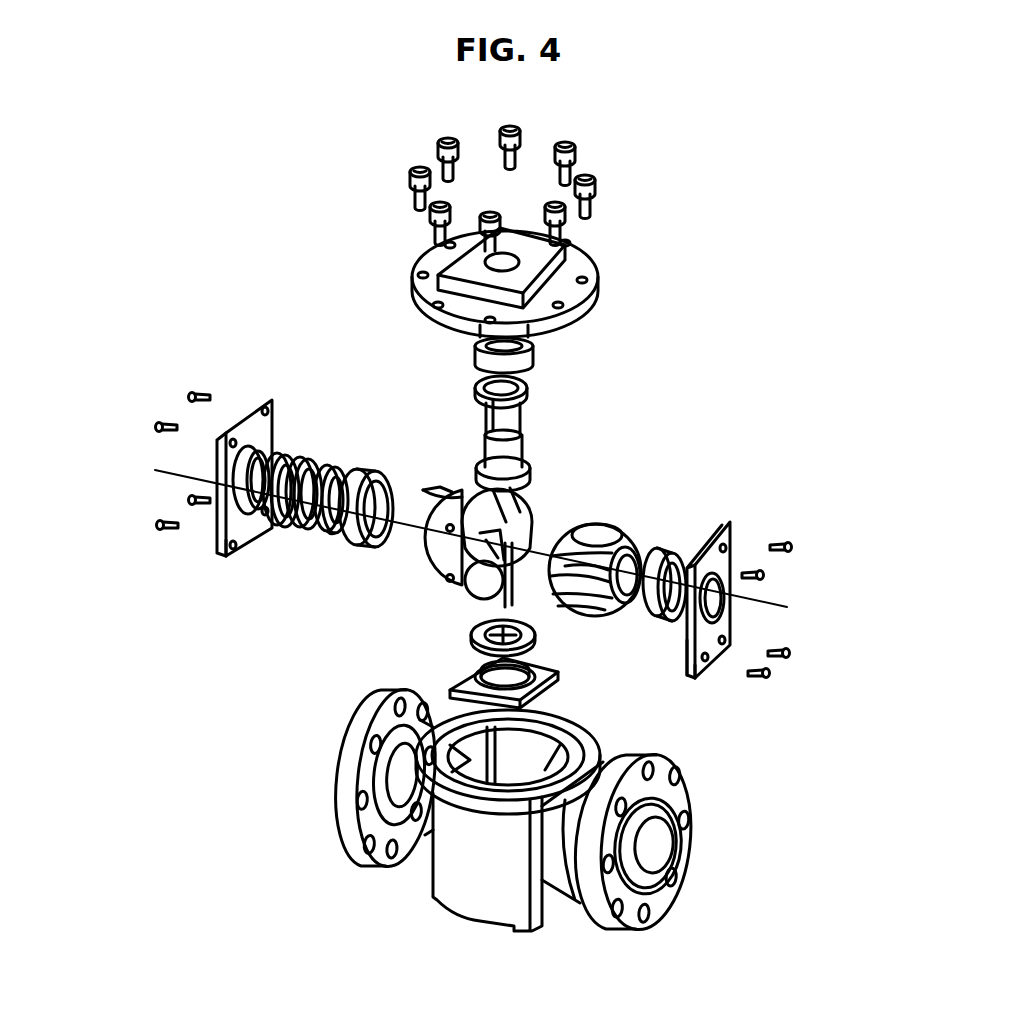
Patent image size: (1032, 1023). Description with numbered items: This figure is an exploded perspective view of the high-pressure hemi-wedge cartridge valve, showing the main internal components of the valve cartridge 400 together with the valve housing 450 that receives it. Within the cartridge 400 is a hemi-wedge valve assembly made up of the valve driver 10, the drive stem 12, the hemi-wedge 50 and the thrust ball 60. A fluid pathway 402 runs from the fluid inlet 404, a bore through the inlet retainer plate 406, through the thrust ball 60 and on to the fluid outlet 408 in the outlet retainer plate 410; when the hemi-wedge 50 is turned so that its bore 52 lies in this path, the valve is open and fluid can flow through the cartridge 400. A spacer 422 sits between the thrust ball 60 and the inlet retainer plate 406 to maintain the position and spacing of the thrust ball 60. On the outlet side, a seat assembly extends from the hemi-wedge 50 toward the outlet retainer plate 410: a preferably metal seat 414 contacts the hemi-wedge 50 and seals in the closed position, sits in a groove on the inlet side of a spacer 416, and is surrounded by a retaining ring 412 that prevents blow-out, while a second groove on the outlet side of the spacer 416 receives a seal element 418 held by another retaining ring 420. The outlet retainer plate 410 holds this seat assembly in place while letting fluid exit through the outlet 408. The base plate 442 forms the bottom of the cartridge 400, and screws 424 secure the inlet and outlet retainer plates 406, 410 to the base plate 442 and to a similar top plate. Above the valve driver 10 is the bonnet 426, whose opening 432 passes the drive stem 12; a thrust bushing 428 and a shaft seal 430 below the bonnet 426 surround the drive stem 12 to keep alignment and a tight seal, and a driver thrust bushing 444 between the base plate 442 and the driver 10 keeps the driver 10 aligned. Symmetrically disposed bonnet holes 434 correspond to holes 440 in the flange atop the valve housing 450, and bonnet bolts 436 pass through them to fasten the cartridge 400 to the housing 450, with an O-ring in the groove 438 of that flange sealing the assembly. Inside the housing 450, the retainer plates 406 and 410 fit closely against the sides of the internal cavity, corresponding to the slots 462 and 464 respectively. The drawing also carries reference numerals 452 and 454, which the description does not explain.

The valve cartridge 400 is at (368, 660).
The fluid pathway 402 is at (138, 464).
The fluid inlet 404 is at (685, 625).
The inlet retainer plate 406 is at (730, 525).
The fluid outlet 408 is at (268, 423).
The outlet retainer plate 410 is at (265, 408).
The retaining ring 412 is at (383, 472).
The seat 414 is at (337, 533).
The spacer 416 is at (340, 463).
The seal element 418 is at (293, 532).
The retaining ring 420 is at (287, 453).
The spacer 422 is at (667, 552).
The screws 424 is at (193, 390).
The bonnet 426 is at (593, 260).
The thrust bushing 428 is at (537, 353).
The shaft seal 430 is at (527, 392).
The opening 432 is at (425, 268).
The bonnet holes 434 is at (435, 303).
The bonnet bolts 436 is at (575, 148).
The groove 438 is at (427, 827).
The holes 440 is at (597, 757).
The base plate 442 is at (545, 692).
The driver thrust bushing 444 is at (537, 635).
The valve housing 450 is at (477, 920).
The plate bottom edge 452 is at (710, 672).
The plate edge 454 is at (243, 545).
The slot 462 is at (507, 787).
The slot 464 is at (417, 750).
The valve driver 10 is at (552, 494).
The drive stem 12 is at (522, 452).
The hemi-wedge 50 is at (428, 563).
The bore 52 is at (438, 490).
The thrust ball 60 is at (610, 525).